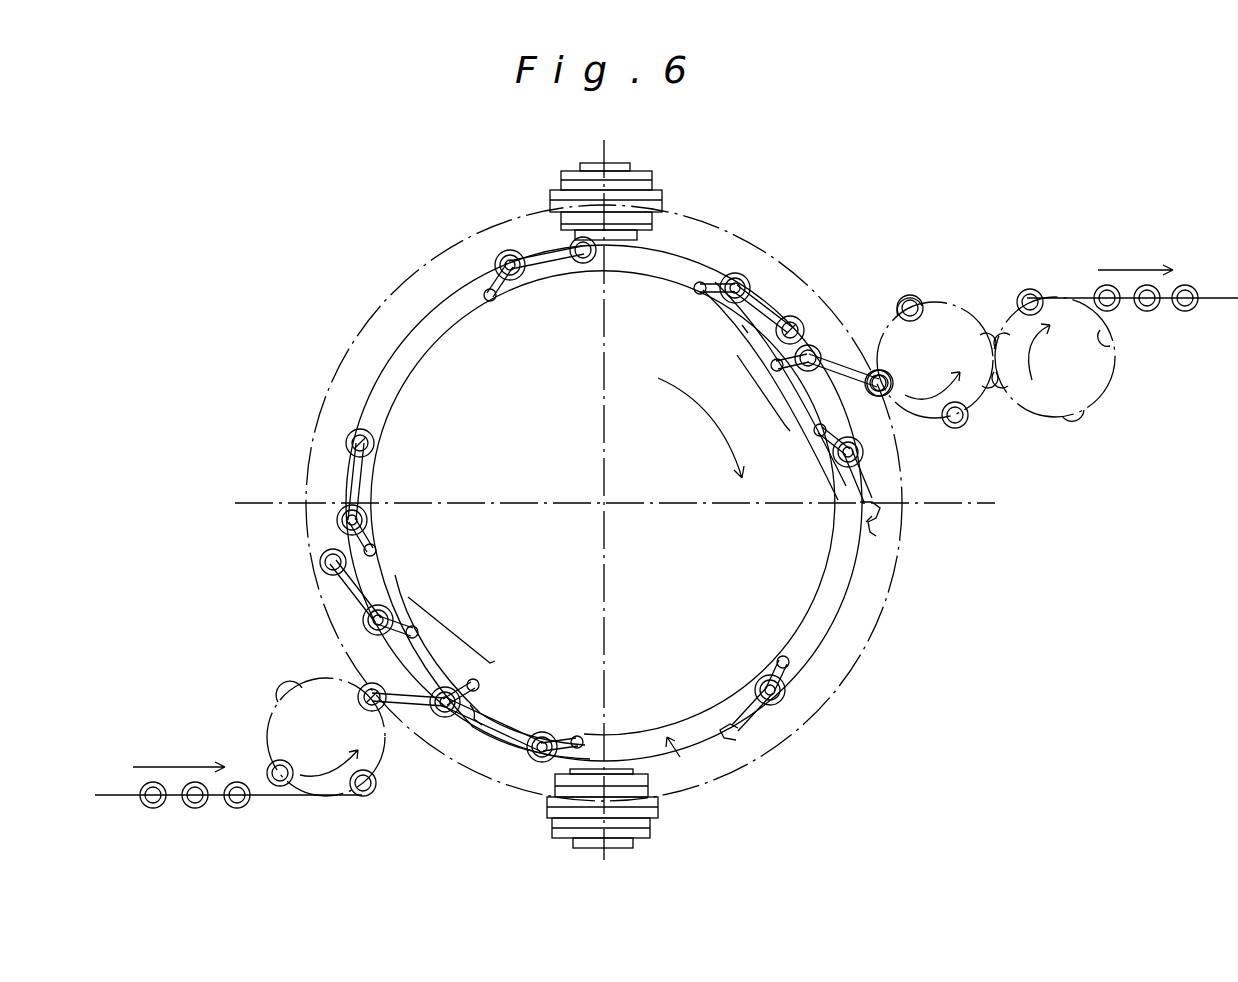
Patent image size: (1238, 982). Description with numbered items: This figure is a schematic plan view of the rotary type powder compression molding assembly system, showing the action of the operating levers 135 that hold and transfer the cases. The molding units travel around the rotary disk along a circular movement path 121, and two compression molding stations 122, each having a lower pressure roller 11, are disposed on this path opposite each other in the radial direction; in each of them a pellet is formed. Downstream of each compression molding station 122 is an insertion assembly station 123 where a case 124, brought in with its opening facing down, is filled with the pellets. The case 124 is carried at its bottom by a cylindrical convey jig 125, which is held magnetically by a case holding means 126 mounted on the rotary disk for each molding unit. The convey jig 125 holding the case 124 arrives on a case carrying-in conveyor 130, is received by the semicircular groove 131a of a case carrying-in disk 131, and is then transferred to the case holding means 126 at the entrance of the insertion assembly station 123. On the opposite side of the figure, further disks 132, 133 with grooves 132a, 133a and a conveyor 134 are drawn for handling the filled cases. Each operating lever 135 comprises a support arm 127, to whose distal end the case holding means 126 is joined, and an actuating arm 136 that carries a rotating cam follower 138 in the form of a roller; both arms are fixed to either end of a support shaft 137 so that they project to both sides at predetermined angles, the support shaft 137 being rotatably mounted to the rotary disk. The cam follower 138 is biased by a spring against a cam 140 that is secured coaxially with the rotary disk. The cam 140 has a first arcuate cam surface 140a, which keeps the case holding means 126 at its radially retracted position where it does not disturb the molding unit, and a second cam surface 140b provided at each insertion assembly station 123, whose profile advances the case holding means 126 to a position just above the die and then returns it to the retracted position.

The lower pressure roller 11 is at (662, 204).
The movement path 121 is at (830, 713).
The compression molding station 122 is at (607, 201).
The insertion assembly station 123 is at (755, 405).
The case 124 is at (148, 788).
The convey jig 125 is at (160, 808).
The case holding means 126 is at (782, 316).
The support arm 127 is at (745, 320).
The case carrying-in conveyor 130 is at (122, 798).
The case carrying-in disk 131 is at (385, 755).
The semicircular groove 131a is at (290, 695).
The discharge star wheel 132 is at (950, 300).
The pocket of discharge star wheel 132a is at (910, 302).
The transfer star wheel 133 is at (1110, 385).
The pocket of transfer star wheel 133a is at (1073, 412).
The discharge conveyor 134 is at (1147, 312).
The operating lever 135 is at (535, 255).
The actuating arm 136 is at (735, 285).
The support shaft 137 is at (700, 300).
The cam follower 138 is at (713, 292).
The cam 140 is at (699, 581).
The first arcuate cam surface 140a is at (470, 290).
The second cam surface 140b is at (740, 342).